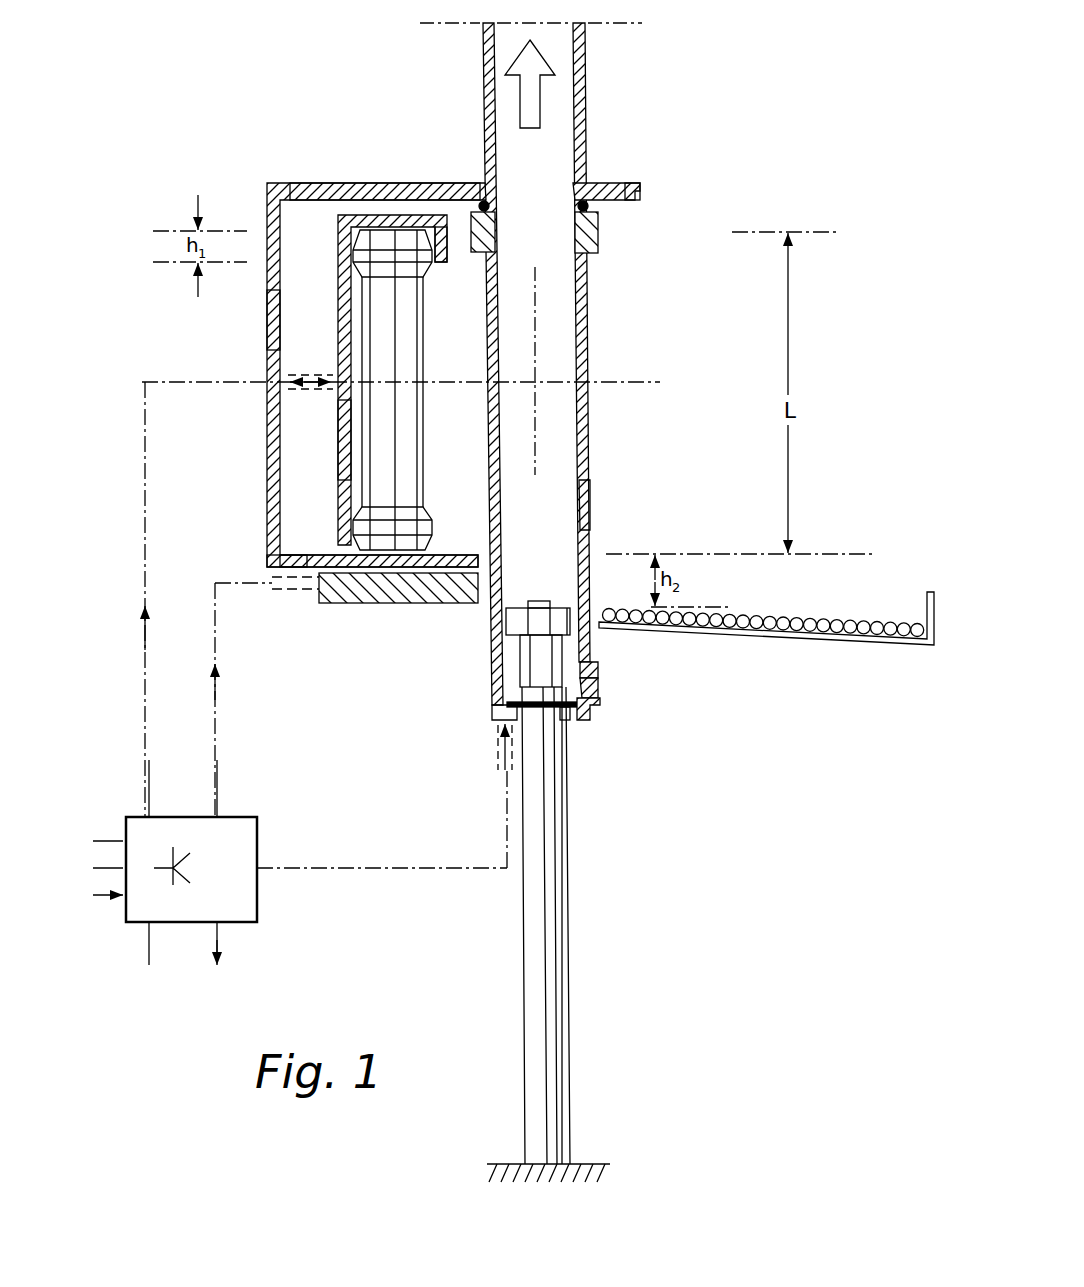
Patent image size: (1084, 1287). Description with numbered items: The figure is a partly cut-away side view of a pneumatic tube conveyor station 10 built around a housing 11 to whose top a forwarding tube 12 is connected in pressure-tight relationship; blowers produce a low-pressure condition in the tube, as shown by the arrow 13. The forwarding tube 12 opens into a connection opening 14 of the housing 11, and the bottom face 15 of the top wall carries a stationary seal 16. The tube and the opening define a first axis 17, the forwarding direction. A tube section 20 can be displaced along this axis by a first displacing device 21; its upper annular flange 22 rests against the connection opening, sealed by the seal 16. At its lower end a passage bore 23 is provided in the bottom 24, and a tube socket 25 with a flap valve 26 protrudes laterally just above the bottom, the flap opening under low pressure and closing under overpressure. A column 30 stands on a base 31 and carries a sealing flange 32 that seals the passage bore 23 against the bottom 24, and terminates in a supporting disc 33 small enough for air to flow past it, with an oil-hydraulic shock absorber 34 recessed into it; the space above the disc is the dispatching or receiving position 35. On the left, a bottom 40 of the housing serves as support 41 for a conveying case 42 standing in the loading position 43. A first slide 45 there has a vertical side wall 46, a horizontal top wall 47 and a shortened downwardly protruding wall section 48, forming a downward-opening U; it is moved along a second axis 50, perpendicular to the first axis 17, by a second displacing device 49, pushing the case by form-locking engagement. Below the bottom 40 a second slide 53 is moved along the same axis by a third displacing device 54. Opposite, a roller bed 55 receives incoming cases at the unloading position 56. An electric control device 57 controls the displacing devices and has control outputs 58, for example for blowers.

The pneumatic tube conveyor station 10 is at (685, 126).
The housing 11 is at (312, 181).
The forwarding tube 12 is at (483, 72).
The arrow 13 is at (535, 105).
The connection opening 14 is at (575, 190).
The bottom face 15 is at (636, 200).
The seal 16 is at (590, 207).
The first axis 17 is at (537, 296).
The tube section 20 is at (592, 488).
The first displacing device 21 is at (495, 742).
The annular flange 22 is at (600, 236).
The passage bore 23 is at (568, 722).
The bottom 24 is at (594, 722).
The tube socket 25 is at (598, 668).
The flap valve 26 is at (597, 690).
The column 30 is at (567, 991).
The base 31 is at (590, 1162).
The sealing flange 32 is at (568, 728).
The supporting disc 33 is at (563, 607).
The shock absorber 34 is at (538, 603).
The dispatching or receiving position 35 is at (582, 505).
The bottom 40 is at (295, 562).
The support 41 is at (318, 551).
The conveying case 42 is at (408, 358).
The loading position 43 is at (322, 144).
The first slide 45 is at (266, 321).
The vertical side wall 46 is at (340, 439).
The horizontal top wall 47 is at (375, 216).
The wall section 48 is at (452, 226).
The second displacing device 49 is at (313, 388).
The second axis 50 is at (655, 382).
The second slide 53 is at (357, 592).
The third displacing device 54 is at (292, 588).
The roller bed 55 is at (812, 645).
The unloading position 56 is at (717, 550).
The electric control device 57 is at (235, 825).
The control outputs 58 is at (208, 948).